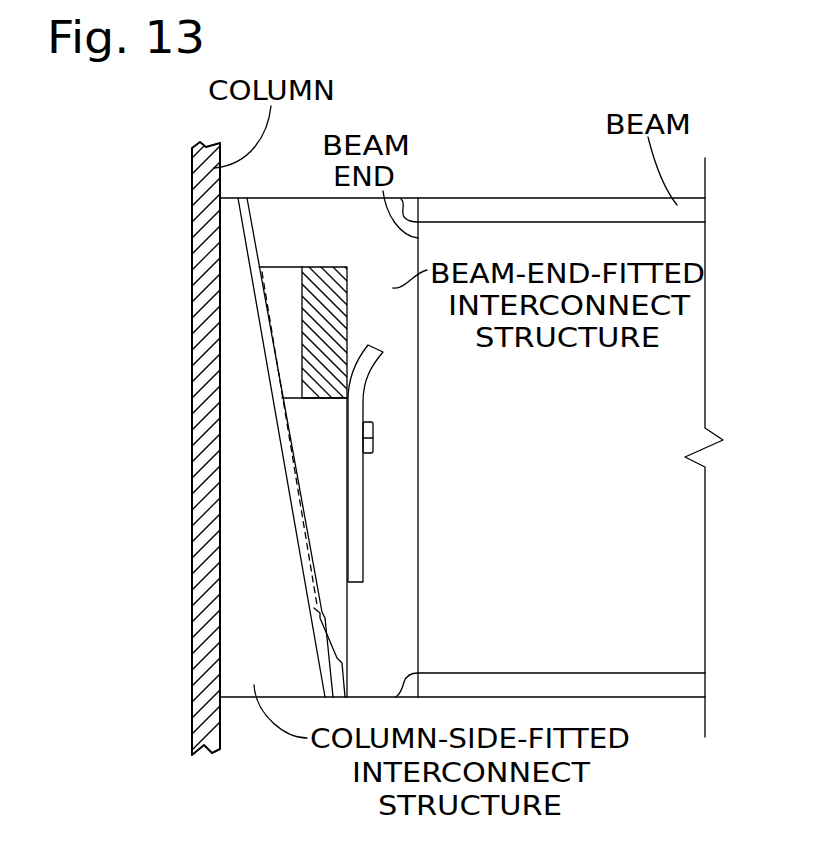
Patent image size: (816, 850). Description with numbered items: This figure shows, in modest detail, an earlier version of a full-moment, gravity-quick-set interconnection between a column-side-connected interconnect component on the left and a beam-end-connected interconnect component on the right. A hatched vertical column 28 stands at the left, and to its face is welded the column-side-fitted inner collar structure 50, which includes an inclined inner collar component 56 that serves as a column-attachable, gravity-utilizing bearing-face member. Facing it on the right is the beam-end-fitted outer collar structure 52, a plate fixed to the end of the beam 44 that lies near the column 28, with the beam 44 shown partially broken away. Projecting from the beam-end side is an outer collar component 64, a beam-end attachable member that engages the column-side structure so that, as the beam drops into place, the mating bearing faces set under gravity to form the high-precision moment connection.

The column 28 is at (190, 212).
The beam 44 is at (533, 195).
The inner collar structure 50 is at (190, 600).
The outer collar structure 52 is at (420, 568).
The inner collar component 56 is at (248, 520).
The outer collar component 64 is at (397, 473).